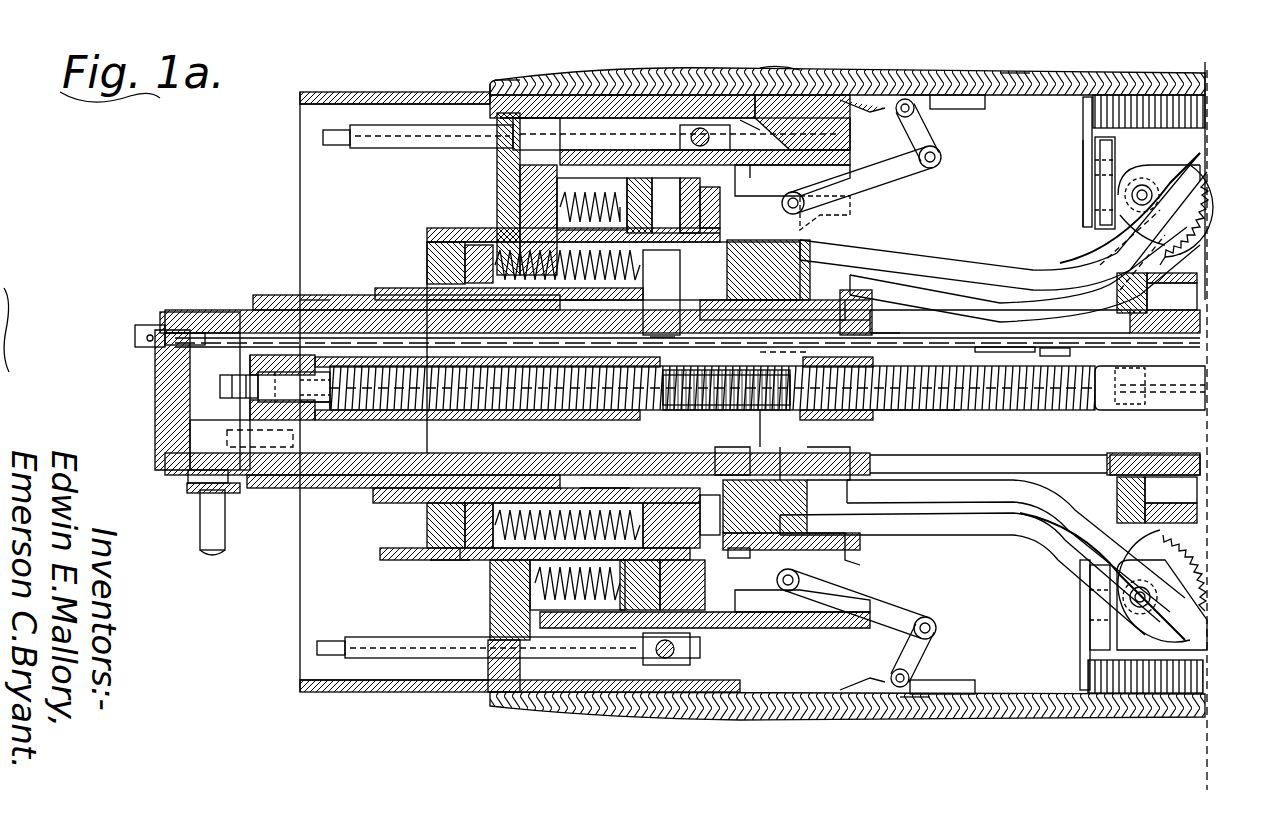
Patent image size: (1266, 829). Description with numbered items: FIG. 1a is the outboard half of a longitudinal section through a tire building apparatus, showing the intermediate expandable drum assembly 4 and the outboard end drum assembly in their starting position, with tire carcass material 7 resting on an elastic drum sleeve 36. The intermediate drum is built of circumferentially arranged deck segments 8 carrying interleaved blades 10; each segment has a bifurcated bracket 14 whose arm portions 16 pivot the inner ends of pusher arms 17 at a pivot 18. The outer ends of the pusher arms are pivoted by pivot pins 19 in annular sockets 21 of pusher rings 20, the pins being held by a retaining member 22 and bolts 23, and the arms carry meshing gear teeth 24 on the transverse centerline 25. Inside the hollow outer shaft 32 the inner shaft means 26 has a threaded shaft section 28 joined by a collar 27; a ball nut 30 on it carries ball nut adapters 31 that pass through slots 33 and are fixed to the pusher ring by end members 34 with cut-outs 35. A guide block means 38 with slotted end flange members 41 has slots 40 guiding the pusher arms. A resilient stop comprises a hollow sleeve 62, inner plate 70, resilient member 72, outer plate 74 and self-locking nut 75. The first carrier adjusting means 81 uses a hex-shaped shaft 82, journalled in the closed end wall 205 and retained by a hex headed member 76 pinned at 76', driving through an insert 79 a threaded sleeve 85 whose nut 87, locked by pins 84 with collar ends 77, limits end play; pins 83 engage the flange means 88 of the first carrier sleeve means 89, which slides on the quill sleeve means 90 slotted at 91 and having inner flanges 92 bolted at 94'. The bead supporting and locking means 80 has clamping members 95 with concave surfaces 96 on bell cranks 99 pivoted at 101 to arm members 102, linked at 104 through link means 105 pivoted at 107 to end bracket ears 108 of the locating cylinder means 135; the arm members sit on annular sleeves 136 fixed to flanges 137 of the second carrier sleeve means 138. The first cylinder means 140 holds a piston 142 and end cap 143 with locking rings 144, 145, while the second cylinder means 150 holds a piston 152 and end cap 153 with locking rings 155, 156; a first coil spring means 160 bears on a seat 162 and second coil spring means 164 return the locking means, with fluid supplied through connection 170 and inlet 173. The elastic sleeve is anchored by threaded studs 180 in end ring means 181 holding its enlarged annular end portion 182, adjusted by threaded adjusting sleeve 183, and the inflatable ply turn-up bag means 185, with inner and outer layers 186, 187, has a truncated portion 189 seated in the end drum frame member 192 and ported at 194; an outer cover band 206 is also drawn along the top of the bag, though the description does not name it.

The intermediate expandable drum assembly 4 is at (1068, 127).
The tire carcass material 7 is at (1018, 20).
The deck segment 8 is at (1080, 194).
The supporting member 10 is at (1164, 128).
The bifurcated bracket 14 is at (1130, 149).
The arm portion 16 is at (1172, 200).
The pusher arm 17 is at (993, 270).
The pivot 18 is at (1138, 197).
The pivot pin 19 is at (810, 268).
The pusher ring 20 is at (854, 318).
The annular socket 21 is at (776, 525).
The retaining member 22 is at (812, 558).
The bolt 23 is at (755, 552).
The meshing gear teeth 24 is at (1205, 233).
The transverse centerline 25 is at (1208, 620).
The inner shaft means 26 is at (925, 419).
The collar 27 is at (1193, 418).
The threaded shaft section 28 is at (950, 411).
The ball nut 30 is at (680, 434).
The ball nut adapter 31 is at (790, 441).
The hollow outer shaft 32 is at (225, 312).
The slot 33 is at (1078, 322).
The end member 34 is at (790, 465).
The cut-out 35 is at (828, 465).
The elastic drum sleeve 36 is at (1010, 696).
The guide block means 38 is at (1087, 510).
The slot 40 is at (1157, 265).
The slotted end flange member 41 is at (1102, 180).
The hollow sleeve 62 is at (470, 480).
The inner plate 70 is at (300, 421).
The resilient member 72 is at (296, 426).
The outer plate 74 is at (248, 360).
The self-locking nut 75 is at (230, 397).
The hex headed member 76 is at (148, 330).
The pin 76' is at (180, 305).
The collar end 77 is at (855, 314).
The insert 79 is at (876, 320).
The bead supporting and locking means 80 is at (845, 128).
The first carrier adjusting means 81 is at (930, 348).
The hex-shaped shaft 82 is at (300, 340).
The pin 83 is at (661, 292).
The pin 84 is at (660, 336).
The threaded sleeve 85 is at (582, 317).
The nut 87 is at (696, 330).
The flange means 88 is at (705, 255).
The first carrier sleeve means 89 is at (372, 288).
The quill sleeve means 90 is at (322, 298).
The slot 91 is at (545, 302).
The inner flange 92 is at (705, 528).
The bolt 94' is at (732, 461).
The clamping member 95 is at (858, 106).
The concave surface 96 is at (832, 92).
The bell crank 99 is at (926, 137).
The pivot 101 is at (912, 94).
The arm member 102 is at (956, 96).
The pivot 104 is at (936, 160).
The link means 105 is at (902, 178).
The pivot 107 is at (790, 212).
The end bracket ear 108 is at (790, 195).
The locating cylinder means 135 is at (733, 614).
The annular sleeve 136 is at (625, 641).
The flange 137 is at (515, 594).
The second carrier sleeve means 138 is at (440, 560).
The first cylinder means 140 is at (470, 556).
The piston 142 is at (495, 240).
The end cap 143 is at (425, 265).
The locking ring 144 is at (493, 500).
The locking ring 145 is at (427, 548).
The second cylinder means 150 is at (660, 548).
The piston 152 is at (740, 560).
The end cap 153 is at (625, 596).
The locking ring 155 is at (690, 196).
The locking ring 156 is at (625, 190).
The first coil spring means 160 is at (545, 486).
The seat 162 is at (605, 480).
The second coil spring means 164 is at (520, 192).
The fluid pressure connection 170 is at (455, 236).
The fluid pressure inlet 173 is at (682, 623).
The threaded stud 180 is at (572, 140).
The end ring means 181 is at (690, 146).
The enlarged annular end portion 182 is at (683, 125).
The threaded adjusting sleeve 183 is at (378, 150).
The inflatable ply turn-up bag means 185 is at (500, 76).
The inner layer 186 is at (492, 98).
The outer layer 187 is at (535, 92).
The truncated portion 189 is at (755, 125).
The end drum frame member 192 is at (615, 100).
The port 194 is at (775, 66).
The closed end wall 205 is at (158, 368).
The cover band 206 is at (718, 74).